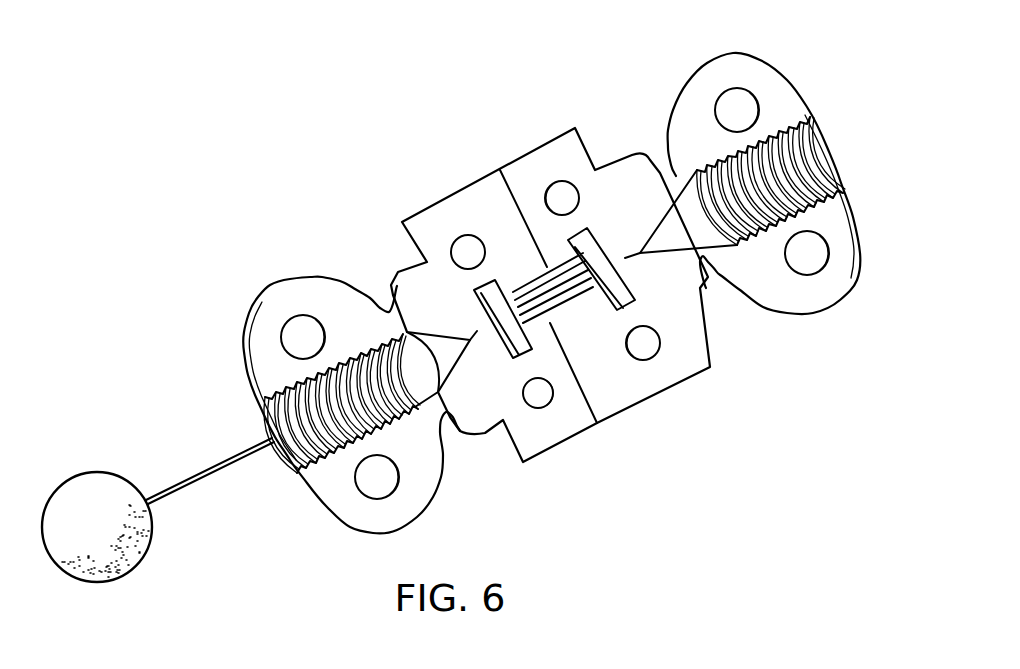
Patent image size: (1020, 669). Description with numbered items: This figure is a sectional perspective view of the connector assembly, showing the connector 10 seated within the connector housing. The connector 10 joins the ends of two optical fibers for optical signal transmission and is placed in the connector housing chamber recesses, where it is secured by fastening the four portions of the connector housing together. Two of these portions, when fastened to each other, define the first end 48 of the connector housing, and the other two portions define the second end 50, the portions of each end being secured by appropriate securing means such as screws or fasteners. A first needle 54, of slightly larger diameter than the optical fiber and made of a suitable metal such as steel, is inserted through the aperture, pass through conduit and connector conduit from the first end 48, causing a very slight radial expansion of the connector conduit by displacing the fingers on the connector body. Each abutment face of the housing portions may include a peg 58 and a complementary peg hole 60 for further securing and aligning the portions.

The connector 10 is at (534, 272).
The first end of the connector housing 48 is at (231, 284).
The second end of the connector housing 50 is at (678, 58).
The first needle 54 is at (209, 475).
The peg 58 is at (632, 340).
The peg hole 60 is at (577, 194).